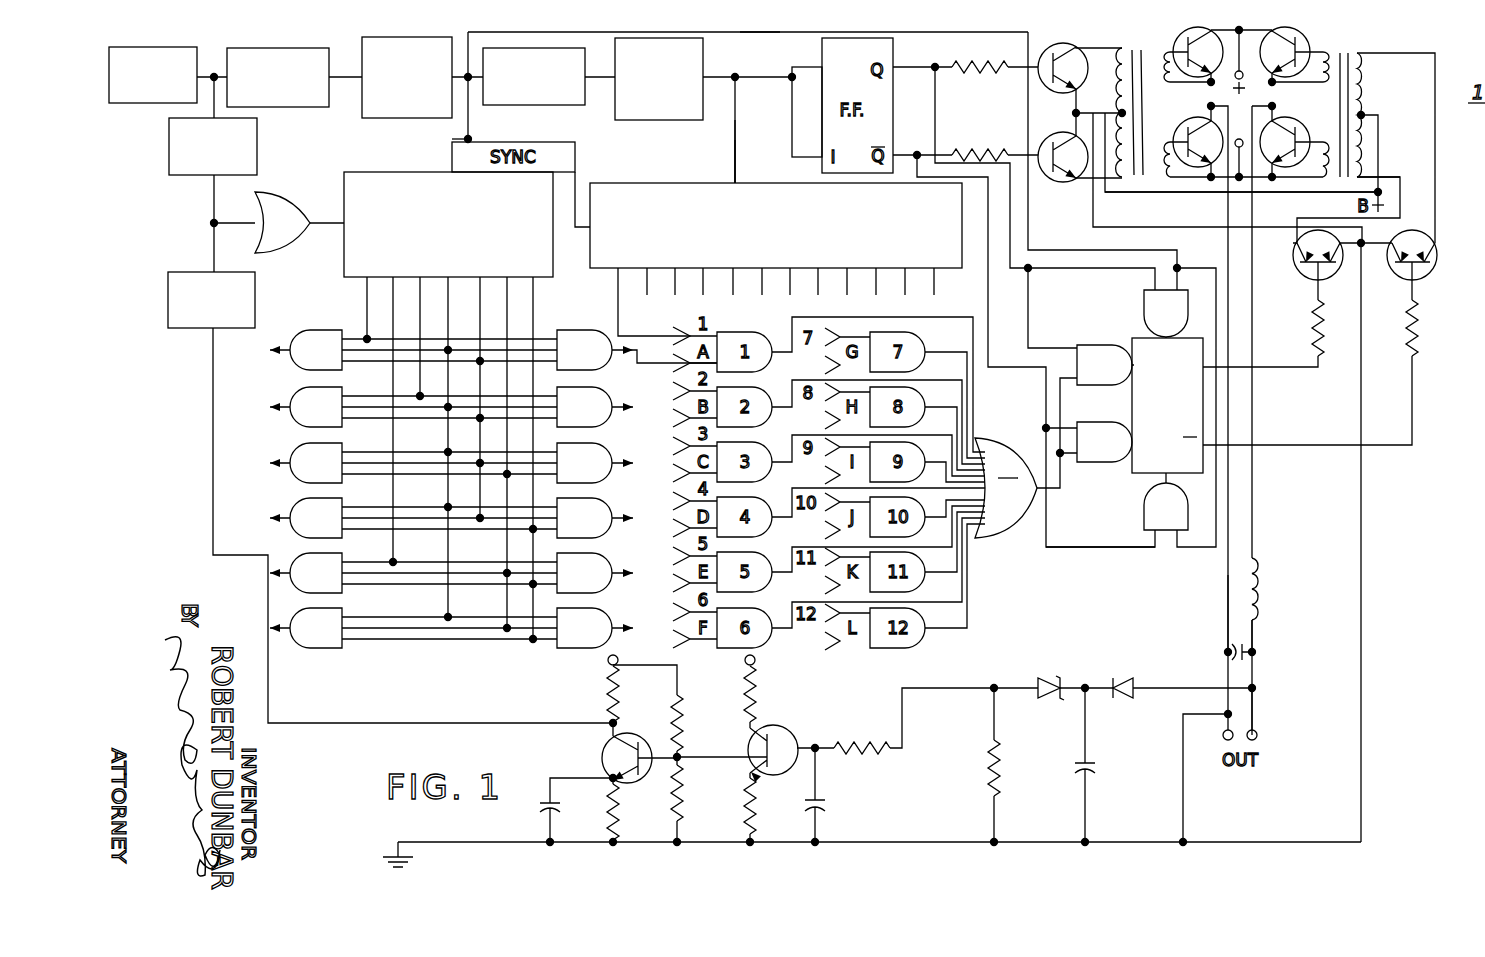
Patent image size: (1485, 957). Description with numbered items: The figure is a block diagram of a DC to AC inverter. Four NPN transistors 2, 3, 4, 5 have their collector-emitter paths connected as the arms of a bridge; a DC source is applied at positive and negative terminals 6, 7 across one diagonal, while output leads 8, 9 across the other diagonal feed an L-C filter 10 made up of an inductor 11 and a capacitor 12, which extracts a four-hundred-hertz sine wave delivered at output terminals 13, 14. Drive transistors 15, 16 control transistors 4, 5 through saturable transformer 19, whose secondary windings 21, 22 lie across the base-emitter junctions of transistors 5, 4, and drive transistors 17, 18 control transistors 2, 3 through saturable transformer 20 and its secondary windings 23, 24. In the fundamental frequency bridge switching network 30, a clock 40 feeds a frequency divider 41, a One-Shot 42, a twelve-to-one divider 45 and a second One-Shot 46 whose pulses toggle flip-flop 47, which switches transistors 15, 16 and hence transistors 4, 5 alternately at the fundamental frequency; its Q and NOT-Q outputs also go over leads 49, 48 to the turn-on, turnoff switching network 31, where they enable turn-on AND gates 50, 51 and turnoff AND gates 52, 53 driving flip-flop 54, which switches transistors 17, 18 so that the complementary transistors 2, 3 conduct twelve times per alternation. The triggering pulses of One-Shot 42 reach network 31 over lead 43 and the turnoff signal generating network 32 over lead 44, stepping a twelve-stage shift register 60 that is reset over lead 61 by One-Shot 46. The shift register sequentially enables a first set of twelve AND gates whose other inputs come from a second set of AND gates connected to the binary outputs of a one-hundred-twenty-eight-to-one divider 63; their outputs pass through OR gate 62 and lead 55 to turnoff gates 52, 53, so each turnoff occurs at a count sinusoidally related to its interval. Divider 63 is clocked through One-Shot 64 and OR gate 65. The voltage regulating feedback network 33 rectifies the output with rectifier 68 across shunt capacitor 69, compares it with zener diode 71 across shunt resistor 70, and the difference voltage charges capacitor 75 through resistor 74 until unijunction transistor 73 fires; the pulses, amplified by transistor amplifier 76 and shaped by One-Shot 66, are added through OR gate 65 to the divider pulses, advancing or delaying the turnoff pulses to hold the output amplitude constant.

The NPN transistor 2 is at (1310, 56).
The NPN transistor 3 is at (1300, 124).
The NPN transistor 4 is at (1205, 110).
The NPN transistor 5 is at (1175, 48).
The positive terminal 6 is at (1243, 68).
The negative terminal 7 is at (1228, 132).
The output lead 8 is at (1224, 576).
The output lead 9 is at (1253, 521).
The L-C filter 10 is at (1276, 669).
The inductor 11 is at (1268, 580).
The capacitor 12 is at (1232, 640).
The output terminal 13 is at (1195, 741).
The output terminal 14 is at (1258, 733).
The drive transistor 15 is at (1052, 142).
The drive transistor 16 is at (1093, 60).
The drive transistor 17 is at (1297, 268).
The drive transistor 18 is at (1440, 262).
The saturable transformer 19 is at (1136, 51).
The saturable transformer 20 is at (1350, 52).
The secondary winding 21 is at (1172, 98).
The secondary winding 22 is at (1165, 188).
The secondary winding 23 is at (1330, 74).
The secondary winding 24 is at (1328, 187).
The fundamental frequency bridge switching network 30 is at (712, 168).
The turn-on, turnoff switching network 31 is at (1108, 599).
The turnoff signal generating network 32 is at (480, 682).
The voltage regulating feedback network 33 is at (852, 881).
The clock 40 is at (150, 104).
The frequency divider 41 is at (310, 58).
The One-Shot multivibrator 42 is at (378, 116).
The lead 43 is at (752, 33).
The lead 44 is at (465, 136).
The 12 to one divider 45 is at (575, 102).
The One-Shot 46 is at (660, 120).
The flip-flop 47 is at (805, 117).
The lead 48 is at (986, 278).
The lead 49 is at (937, 128).
The turn-on AND gate 50 is at (1150, 305).
The turn-on AND gate 51 is at (1156, 526).
The turnoff AND gate 52 is at (1110, 456).
The turnoff AND gate 53 is at (1110, 378).
The turn-on and turn-off flip-flop 54 is at (1203, 408).
The lead 55 is at (1062, 495).
The 12-stage shift register 60 is at (607, 272).
The lead 61 is at (737, 167).
The OR gate 62 is at (1010, 532).
The 128-1 divider 63 is at (345, 276).
The One-Shot 64 is at (185, 178).
The OR gate 65 is at (285, 200).
The One-Shot 66 is at (170, 325).
The rectifier 68 is at (1120, 698).
The shunt capacitor 69 is at (1093, 771).
The shunt resistor 70 is at (1000, 776).
The zener diode 71 is at (1030, 678).
The unijunction transistor 73 is at (760, 782).
The resistor 74 is at (858, 746).
The shunt capacitor 75 is at (828, 806).
The transistor amplifier 76 is at (602, 755).